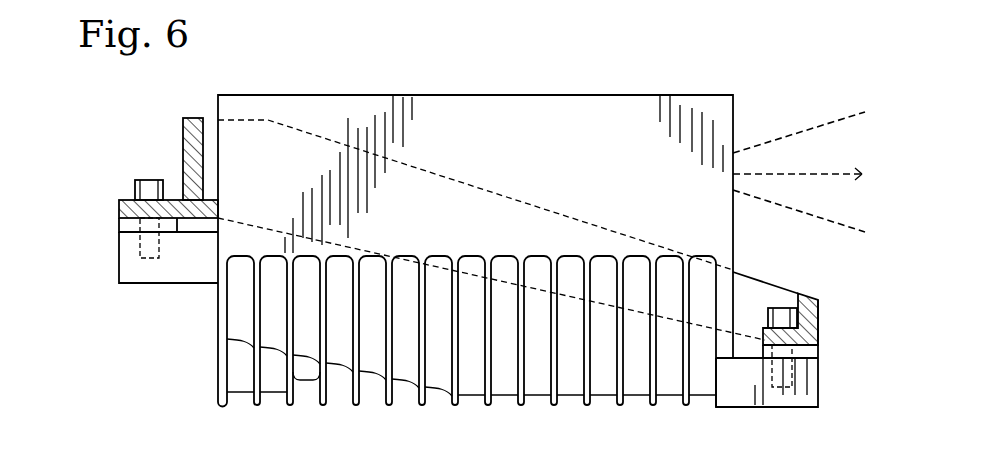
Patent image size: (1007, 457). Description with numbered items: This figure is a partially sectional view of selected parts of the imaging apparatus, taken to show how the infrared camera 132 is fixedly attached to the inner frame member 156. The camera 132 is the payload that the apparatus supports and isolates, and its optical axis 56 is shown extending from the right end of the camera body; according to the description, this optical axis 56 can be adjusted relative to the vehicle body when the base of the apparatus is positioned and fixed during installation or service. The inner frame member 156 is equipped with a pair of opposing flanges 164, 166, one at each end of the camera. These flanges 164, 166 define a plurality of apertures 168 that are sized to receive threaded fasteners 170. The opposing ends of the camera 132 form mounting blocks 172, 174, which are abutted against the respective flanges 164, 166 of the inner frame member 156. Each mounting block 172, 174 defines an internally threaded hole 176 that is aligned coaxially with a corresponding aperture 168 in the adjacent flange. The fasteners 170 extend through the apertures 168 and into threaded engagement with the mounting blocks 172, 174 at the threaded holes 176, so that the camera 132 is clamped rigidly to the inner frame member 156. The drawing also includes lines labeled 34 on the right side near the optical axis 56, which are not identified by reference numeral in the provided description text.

The infrared camera 132 is at (486, 94).
The inner frame member 156 is at (183, 126).
The apertures 168 is at (152, 212).
The flange 164 is at (119, 207).
The mounting block 172 is at (119, 273).
The threaded fasteners 170 is at (150, 180).
The internally threaded holes 176 is at (160, 250).
The flange 166 is at (763, 336).
The mounting block 174 is at (818, 385).
The air flow 34 is at (800, 133).
The optical axis 56 is at (770, 178).